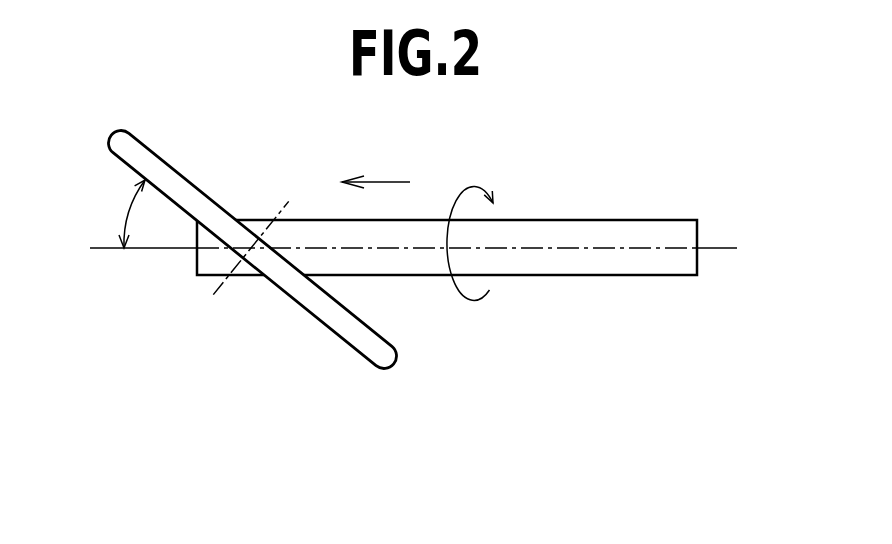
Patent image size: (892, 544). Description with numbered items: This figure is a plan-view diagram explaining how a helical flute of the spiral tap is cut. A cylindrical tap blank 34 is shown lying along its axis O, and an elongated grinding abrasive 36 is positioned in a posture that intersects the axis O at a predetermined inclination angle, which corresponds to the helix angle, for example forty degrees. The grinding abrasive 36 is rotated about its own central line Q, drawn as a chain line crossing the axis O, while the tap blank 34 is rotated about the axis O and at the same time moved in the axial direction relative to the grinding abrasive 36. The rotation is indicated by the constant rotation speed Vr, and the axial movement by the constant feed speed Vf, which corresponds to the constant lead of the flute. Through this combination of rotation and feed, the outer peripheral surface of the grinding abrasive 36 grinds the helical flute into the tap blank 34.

The tap blank 34 is at (577, 263).
The grinding abrasive 36 is at (186, 187).
The axis O is at (430, 249).
The central line Q is at (238, 263).
The feed speed Vf is at (376, 164).
The rotation speed Vr is at (470, 226).